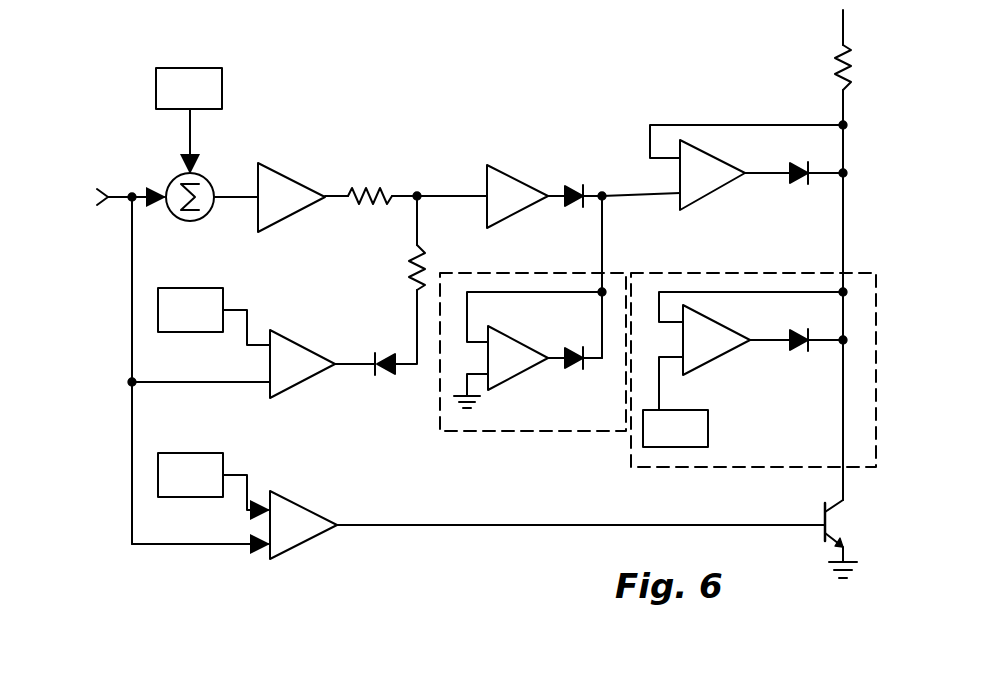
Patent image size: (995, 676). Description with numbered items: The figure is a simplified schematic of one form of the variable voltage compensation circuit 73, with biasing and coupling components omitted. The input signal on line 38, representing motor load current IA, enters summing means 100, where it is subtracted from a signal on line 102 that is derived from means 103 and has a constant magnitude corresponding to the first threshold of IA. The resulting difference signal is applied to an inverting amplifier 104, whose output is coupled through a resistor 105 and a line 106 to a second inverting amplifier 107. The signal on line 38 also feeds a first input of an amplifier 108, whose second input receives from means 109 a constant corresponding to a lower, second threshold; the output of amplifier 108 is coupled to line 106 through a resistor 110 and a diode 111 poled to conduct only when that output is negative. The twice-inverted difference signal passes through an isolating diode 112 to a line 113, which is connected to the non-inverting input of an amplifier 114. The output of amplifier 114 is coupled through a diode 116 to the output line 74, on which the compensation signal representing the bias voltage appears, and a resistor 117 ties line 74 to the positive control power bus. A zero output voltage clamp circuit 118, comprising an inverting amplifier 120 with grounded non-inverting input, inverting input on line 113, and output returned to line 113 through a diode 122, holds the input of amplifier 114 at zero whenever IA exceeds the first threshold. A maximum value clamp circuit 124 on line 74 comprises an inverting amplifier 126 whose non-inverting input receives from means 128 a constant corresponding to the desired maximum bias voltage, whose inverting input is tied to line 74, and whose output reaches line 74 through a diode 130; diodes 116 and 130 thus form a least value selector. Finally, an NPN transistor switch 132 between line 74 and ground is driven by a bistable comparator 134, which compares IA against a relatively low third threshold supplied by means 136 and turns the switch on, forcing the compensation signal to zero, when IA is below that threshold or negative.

The line 38 is at (118, 190).
The variable voltage compensation circuit 73 is at (510, 566).
The output line 74 is at (845, 178).
The summing means 100 is at (203, 218).
The line 102 is at (189, 136).
The means 103 is at (223, 72).
The inverting amplifier 104 is at (285, 178).
The resistor 105 is at (368, 190).
The line 106 is at (434, 193).
The inverting amplifier 107 is at (521, 180).
The amplifier 108 is at (292, 341).
The means 109 is at (209, 288).
The resistor 110 is at (412, 253).
The diode 111 is at (393, 376).
The isolating diode 112 is at (578, 185).
The line 113 is at (632, 198).
The amplifier 114 is at (712, 194).
The diode 116 is at (800, 185).
The resistor 117 is at (836, 72).
The zero output voltage clamp circuit 118 is at (473, 432).
The inverting amplifier 120 is at (519, 380).
The diode 122 is at (576, 346).
The maximum value clamp circuit 124 is at (706, 468).
The inverting amplifier 126 is at (714, 362).
The means 128 is at (709, 425).
The diode 130 is at (798, 352).
The NPN transistor switch 132 is at (838, 517).
The bistable comparator 134 is at (302, 504).
The means 136 is at (170, 452).